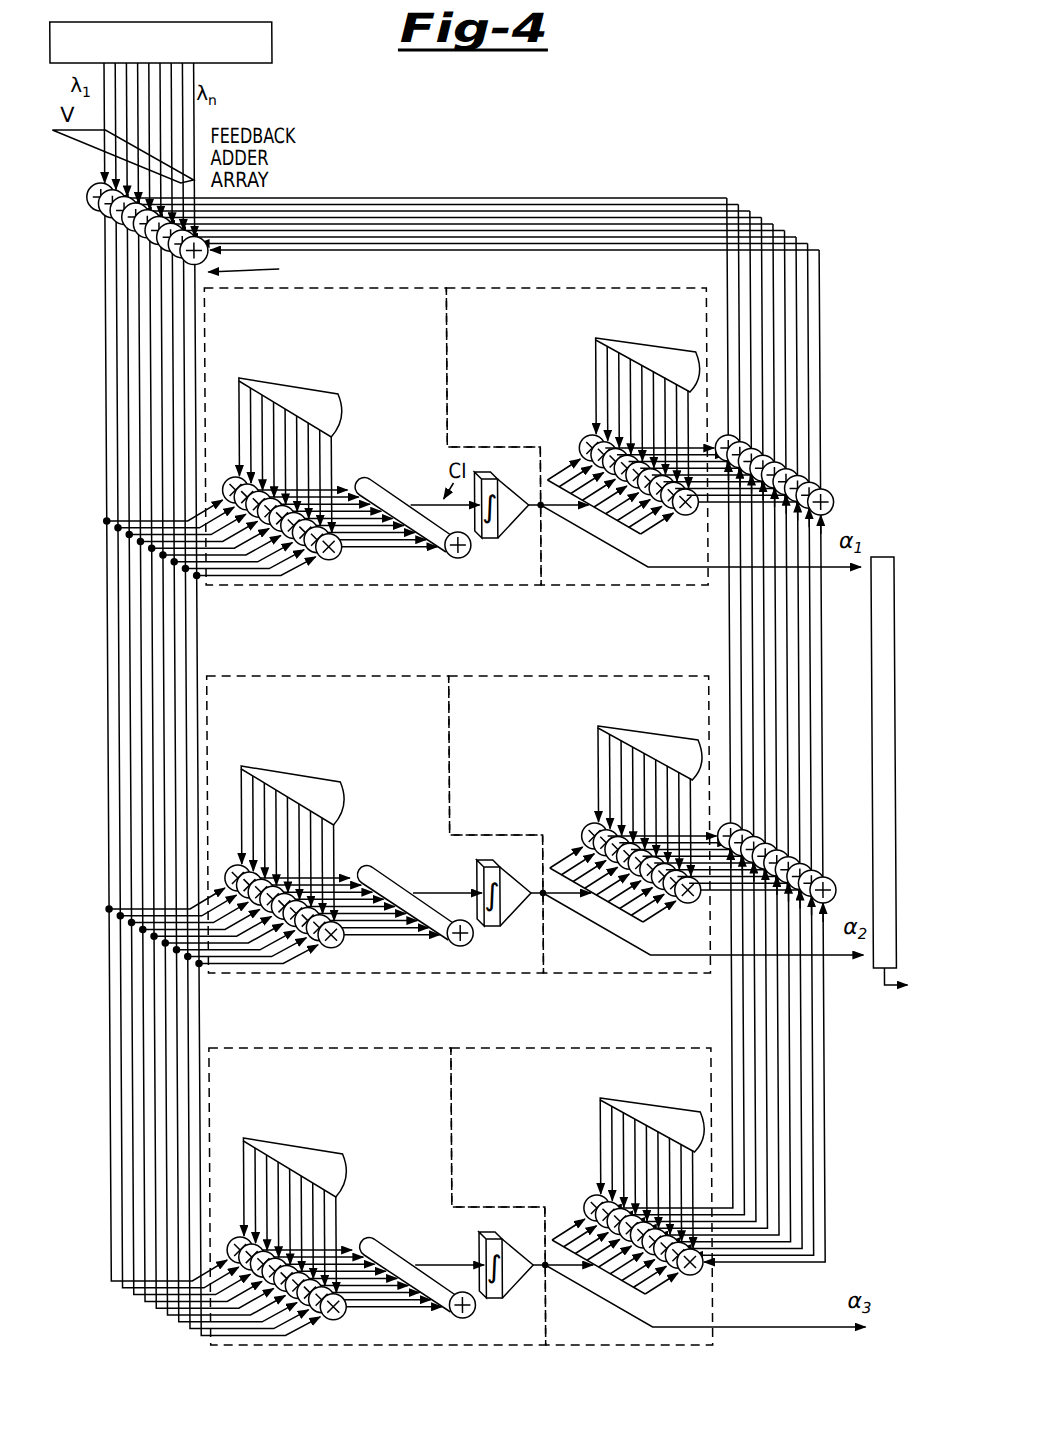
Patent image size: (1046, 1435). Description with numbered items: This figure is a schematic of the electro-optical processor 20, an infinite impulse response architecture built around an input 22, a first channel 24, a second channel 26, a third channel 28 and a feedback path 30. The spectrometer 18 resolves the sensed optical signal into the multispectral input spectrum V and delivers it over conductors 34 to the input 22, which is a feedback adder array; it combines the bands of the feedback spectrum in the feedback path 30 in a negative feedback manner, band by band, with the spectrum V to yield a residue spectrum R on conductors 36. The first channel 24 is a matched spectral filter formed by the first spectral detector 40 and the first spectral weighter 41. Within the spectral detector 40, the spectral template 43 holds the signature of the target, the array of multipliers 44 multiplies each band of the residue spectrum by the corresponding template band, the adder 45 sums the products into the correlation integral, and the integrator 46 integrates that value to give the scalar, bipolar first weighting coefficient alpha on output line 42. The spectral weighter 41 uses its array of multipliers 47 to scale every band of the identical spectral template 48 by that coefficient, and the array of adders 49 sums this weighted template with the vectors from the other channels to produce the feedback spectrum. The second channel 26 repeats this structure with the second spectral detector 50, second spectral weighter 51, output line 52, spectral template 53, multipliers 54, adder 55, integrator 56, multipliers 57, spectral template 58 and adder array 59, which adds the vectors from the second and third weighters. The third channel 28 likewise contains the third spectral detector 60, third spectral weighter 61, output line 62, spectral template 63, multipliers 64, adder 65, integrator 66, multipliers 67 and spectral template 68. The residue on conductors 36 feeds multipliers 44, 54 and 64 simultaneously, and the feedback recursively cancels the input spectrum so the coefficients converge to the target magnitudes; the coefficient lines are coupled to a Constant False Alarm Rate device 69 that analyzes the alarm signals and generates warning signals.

The spectrometer 18 is at (257, 38).
The electro-optical processor 20 is at (598, 140).
The input 22 is at (90, 191).
The first channel 24 is at (622, 270).
The second channel 26 is at (527, 658).
The third channel 28 is at (527, 1030).
The feedback path 30 is at (637, 187).
The conductors 34 is at (197, 72).
The conductors 36 is at (101, 397).
The spectral detector F1 40 is at (418, 325).
The spectral weighter F1 41 is at (681, 320).
The output line 42 is at (522, 490).
The spectral template 43 is at (300, 386).
The array of multipliers 44 is at (236, 470).
The adder 45 is at (440, 557).
The integrator 46 is at (508, 522).
The array of multipliers 47 is at (672, 524).
The spectral template 48 is at (632, 345).
The array of adders 49 is at (832, 486).
The spectral detector F2 50 is at (375, 824).
The spectral weighter F2 51 is at (580, 824).
The output line 52 is at (650, 950).
The spectral template 53 is at (305, 829).
The array of multipliers 54 is at (224, 856).
The adder 55 is at (416, 945).
The integrator 56 is at (520, 919).
The array of multipliers 57 is at (626, 886).
The spectral template 58 is at (647, 779).
The adder array 59 is at (737, 859).
The spectral detector F3 60 is at (377, 1196).
The spectral weighter F3 61 is at (582, 1196).
The output line 62 is at (640, 1269).
The spectral template 63 is at (307, 1201).
The array of multipliers 64 is at (280, 1219).
The adder 65 is at (418, 1317).
The integrator 66 is at (522, 1291).
The array of multipliers 67 is at (628, 1258).
The spectral template 68 is at (649, 1151).
The Constant False Alarm Rate device 69 is at (880, 565).